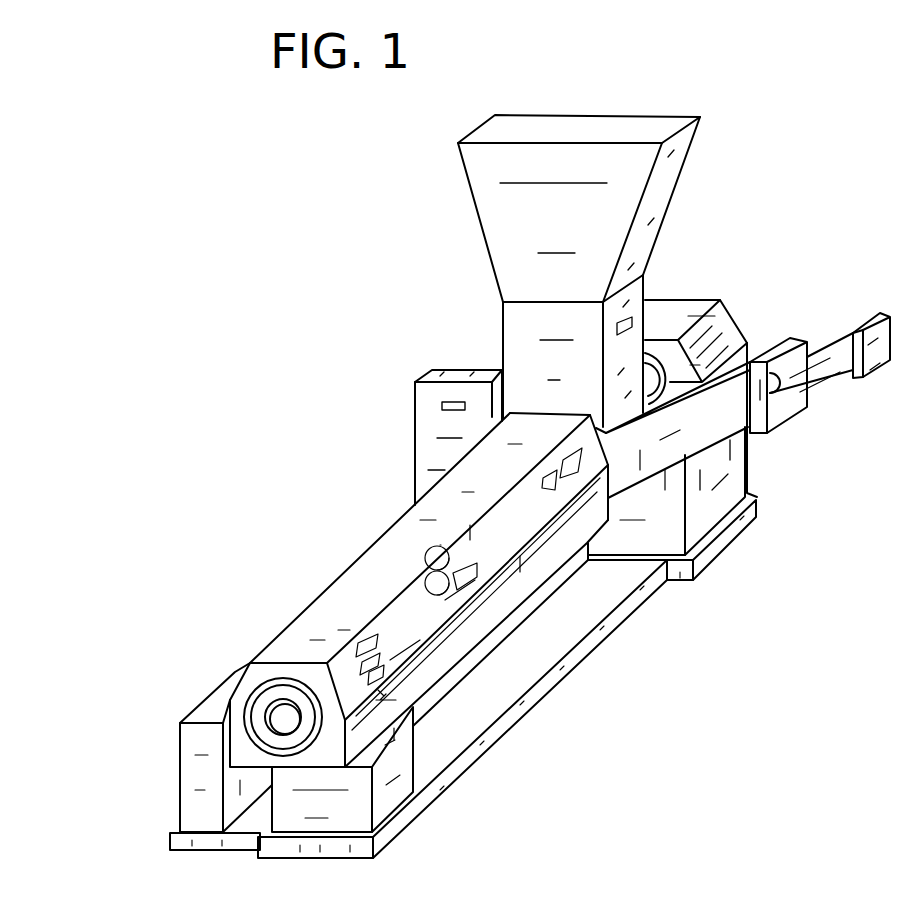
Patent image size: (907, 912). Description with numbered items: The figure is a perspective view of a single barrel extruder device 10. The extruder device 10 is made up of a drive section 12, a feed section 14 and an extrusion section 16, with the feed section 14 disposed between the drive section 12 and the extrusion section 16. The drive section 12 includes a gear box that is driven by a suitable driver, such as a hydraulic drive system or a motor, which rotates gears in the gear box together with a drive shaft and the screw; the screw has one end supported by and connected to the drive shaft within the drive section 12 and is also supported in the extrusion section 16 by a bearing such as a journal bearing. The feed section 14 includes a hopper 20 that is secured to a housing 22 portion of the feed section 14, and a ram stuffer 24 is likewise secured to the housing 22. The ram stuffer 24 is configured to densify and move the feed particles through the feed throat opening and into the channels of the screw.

The extruder device 10 is at (152, 318).
The drive section 12 is at (745, 277).
The feed section 14 is at (430, 341).
The extrusion section 16 is at (302, 549).
The hopper 20 is at (682, 206).
The housing 22 is at (602, 428).
The ram stuffer 24 is at (702, 427).